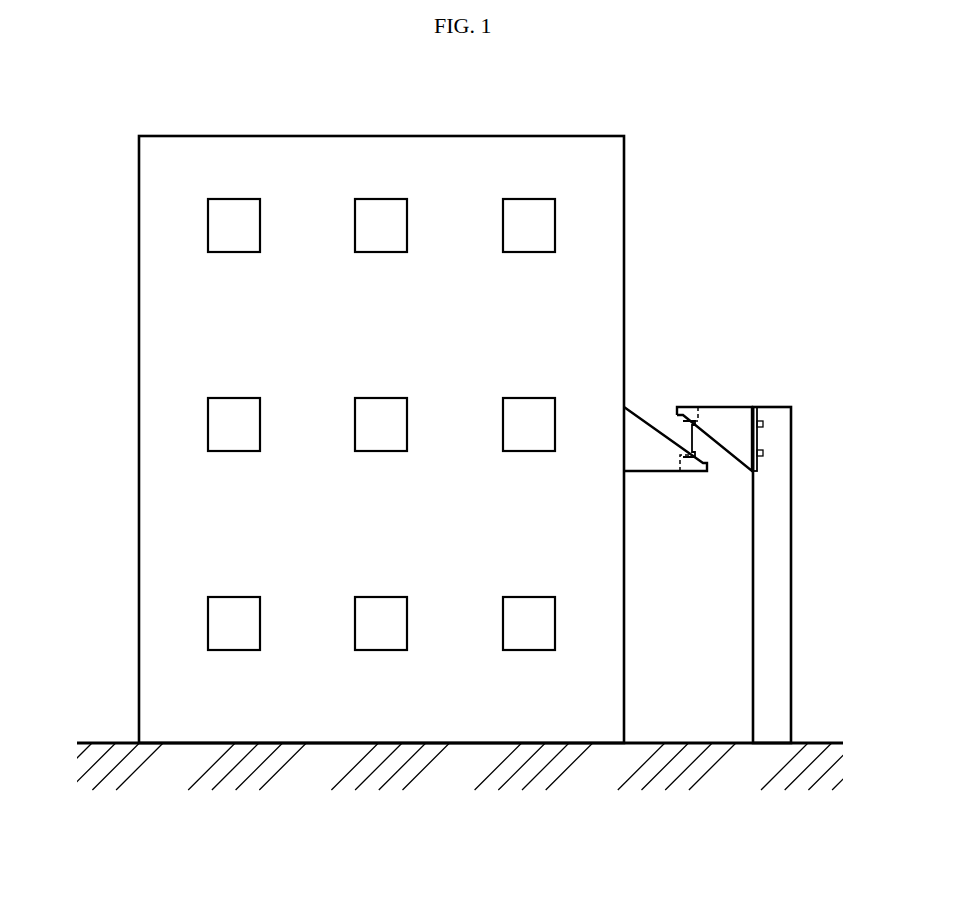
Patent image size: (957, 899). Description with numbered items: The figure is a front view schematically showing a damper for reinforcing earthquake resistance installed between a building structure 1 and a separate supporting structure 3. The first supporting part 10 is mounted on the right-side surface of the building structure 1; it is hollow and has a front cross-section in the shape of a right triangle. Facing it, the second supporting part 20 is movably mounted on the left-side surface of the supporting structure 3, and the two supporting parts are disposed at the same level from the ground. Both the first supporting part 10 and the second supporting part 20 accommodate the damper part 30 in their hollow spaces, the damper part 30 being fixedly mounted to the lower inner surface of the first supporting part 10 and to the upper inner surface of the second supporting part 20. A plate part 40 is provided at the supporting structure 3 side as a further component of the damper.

The building structure 1 is at (145, 313).
The supporting structure 3 is at (780, 588).
The first supporting part 10 is at (660, 462).
The second supporting part 20 is at (720, 406).
The damper part 30 is at (690, 440).
The plate part 40 is at (758, 437).